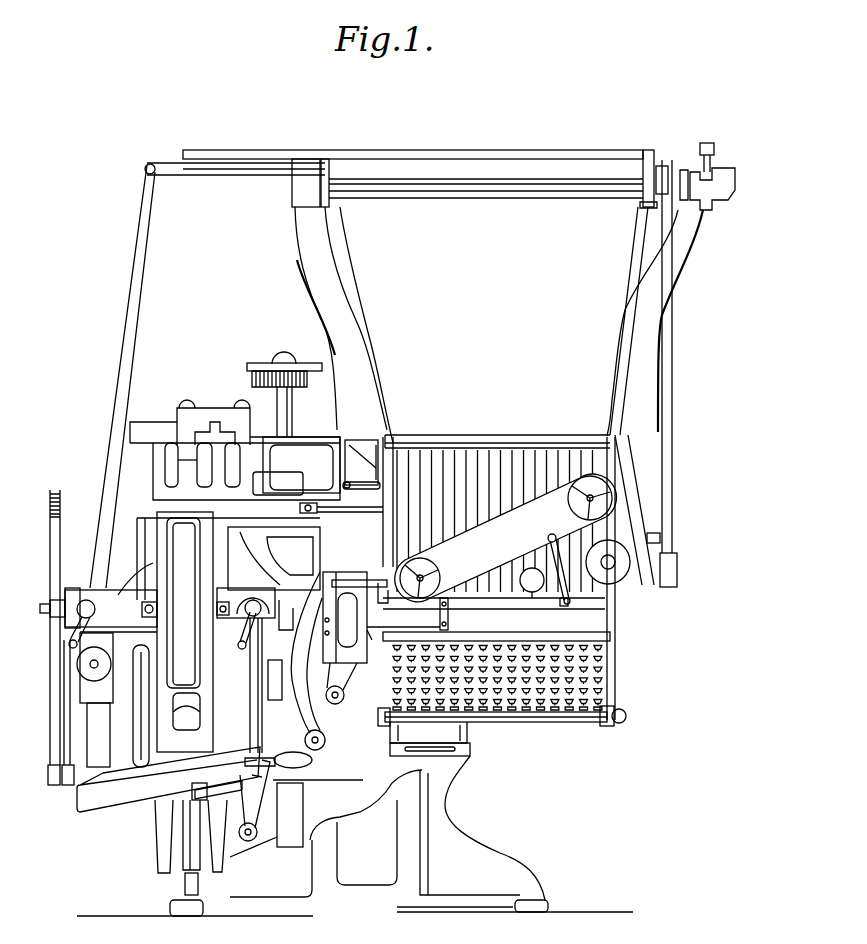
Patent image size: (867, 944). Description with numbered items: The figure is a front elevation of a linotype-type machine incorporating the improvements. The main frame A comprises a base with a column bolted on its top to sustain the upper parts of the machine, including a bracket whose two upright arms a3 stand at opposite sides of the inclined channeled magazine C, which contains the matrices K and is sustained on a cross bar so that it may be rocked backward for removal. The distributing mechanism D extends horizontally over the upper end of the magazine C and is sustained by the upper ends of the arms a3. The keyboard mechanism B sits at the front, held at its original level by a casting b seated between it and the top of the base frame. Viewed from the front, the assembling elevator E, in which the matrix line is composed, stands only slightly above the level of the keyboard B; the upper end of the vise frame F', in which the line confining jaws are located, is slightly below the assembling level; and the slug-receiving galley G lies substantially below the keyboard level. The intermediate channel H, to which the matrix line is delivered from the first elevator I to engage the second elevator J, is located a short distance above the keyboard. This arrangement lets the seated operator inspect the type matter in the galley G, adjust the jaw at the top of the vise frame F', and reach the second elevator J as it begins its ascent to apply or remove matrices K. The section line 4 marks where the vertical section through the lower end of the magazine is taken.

The main frame A is at (440, 827).
The keyboard mechanism B is at (607, 675).
The casting b is at (430, 739).
The inclined channeled magazine C is at (607, 373).
The distributing mechanism D is at (459, 176).
The assembling elevator E is at (334, 638).
The vise frame F' is at (98, 637).
The slug-receiving galley G is at (194, 810).
The intermediate channel H is at (261, 500).
The first elevator I is at (213, 639).
The second elevator J is at (284, 358).
The matrices K is at (303, 381).
The upright arms a3 is at (312, 271).
The section line 4 is at (572, 432).